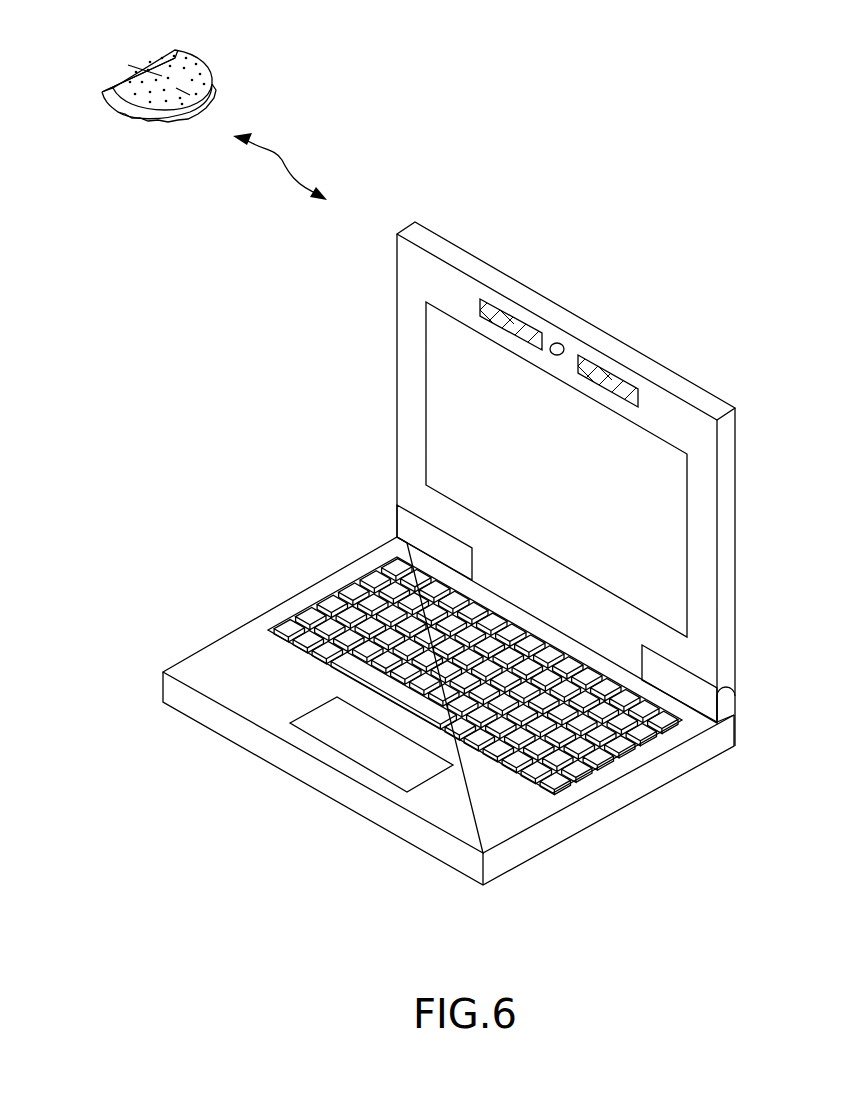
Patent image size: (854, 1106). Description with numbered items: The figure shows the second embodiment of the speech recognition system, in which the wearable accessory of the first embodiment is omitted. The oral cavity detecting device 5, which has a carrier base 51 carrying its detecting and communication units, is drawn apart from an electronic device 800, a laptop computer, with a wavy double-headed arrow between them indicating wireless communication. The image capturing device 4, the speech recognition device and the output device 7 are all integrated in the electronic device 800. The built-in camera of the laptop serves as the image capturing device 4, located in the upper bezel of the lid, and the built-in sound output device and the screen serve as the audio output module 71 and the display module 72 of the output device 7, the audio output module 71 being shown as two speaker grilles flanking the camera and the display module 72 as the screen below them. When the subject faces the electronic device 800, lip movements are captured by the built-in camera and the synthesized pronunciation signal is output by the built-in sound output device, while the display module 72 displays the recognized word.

The oral cavity detecting device 5 is at (190, 50).
The carrier base 51 is at (125, 108).
The output device 7 is at (449, 514).
The electronic device 800 is at (478, 250).
The audio output module 71 is at (513, 332).
The display module 72 is at (466, 387).
The image capturing device 4 is at (558, 343).